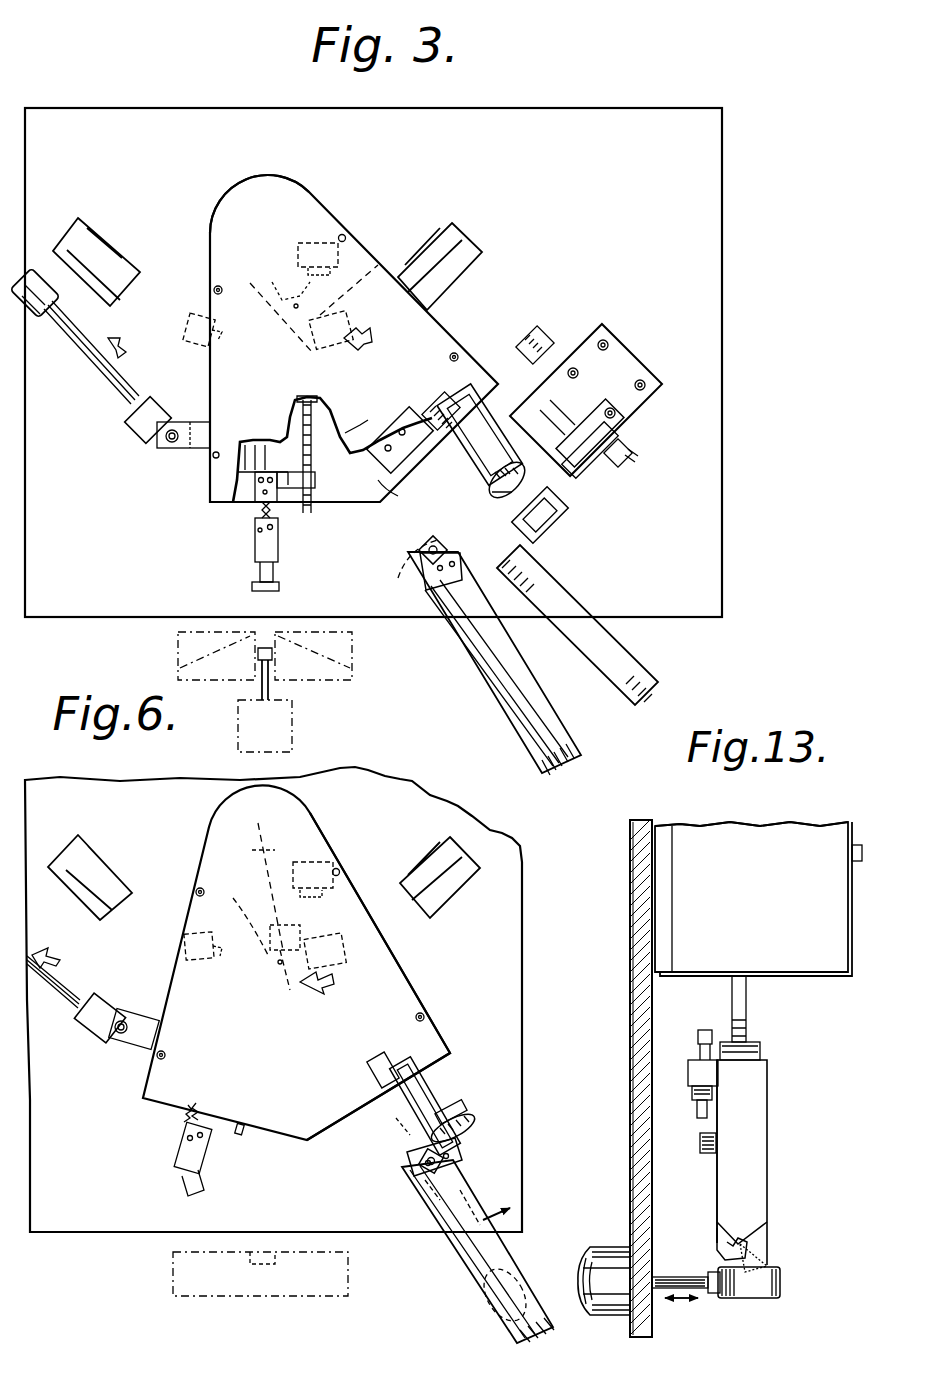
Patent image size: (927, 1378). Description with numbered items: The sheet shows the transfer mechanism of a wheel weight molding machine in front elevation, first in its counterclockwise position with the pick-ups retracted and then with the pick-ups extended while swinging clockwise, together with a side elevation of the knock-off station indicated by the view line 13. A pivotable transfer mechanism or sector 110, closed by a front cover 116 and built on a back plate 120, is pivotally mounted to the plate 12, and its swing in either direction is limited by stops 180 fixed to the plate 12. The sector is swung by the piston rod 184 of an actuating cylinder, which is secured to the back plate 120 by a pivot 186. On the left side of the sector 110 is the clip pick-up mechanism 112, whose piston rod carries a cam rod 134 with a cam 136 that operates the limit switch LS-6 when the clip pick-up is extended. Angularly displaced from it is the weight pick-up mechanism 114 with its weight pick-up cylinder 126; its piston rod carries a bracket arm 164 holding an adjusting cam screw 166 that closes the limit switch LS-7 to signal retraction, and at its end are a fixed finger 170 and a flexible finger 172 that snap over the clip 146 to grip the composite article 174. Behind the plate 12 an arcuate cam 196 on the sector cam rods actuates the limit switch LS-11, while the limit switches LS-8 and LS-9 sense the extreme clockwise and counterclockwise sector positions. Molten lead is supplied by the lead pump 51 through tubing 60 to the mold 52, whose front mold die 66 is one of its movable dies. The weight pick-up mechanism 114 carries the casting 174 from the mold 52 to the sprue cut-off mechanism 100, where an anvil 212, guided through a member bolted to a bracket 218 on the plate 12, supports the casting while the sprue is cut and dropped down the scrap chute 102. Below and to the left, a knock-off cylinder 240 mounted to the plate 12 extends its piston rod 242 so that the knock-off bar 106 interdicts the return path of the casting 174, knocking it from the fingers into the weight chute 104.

In FIG. 3, the plate 12 is at (688, 193).
In FIG. 6, the plate 12 is at (485, 850).
In FIG. 13, the plate 12 is at (636, 1170).
In FIG. 6, the section line 13 is at (462, 1230).
In FIG. 3, the lead pump 51 is at (292, 733).
In FIG. 6, the mold 52 is at (352, 1278).
In FIG. 3, the tubing 60 is at (270, 688).
In FIG. 3, the front mold die 66 is at (178, 660).
In FIG. 3, the sprue cut-off mechanism 100 is at (580, 502).
In FIG. 3, the scrap chute 102 is at (566, 608).
In FIG. 3, the weight chute 104 is at (556, 742).
In FIG. 6, the weight chute 104 is at (465, 1257).
In FIG. 3, the knock-off bar 106 is at (443, 548).
In FIG. 6, the knock-off bar 106 is at (442, 1163).
In FIG. 13, the knock-off bar 106 is at (780, 1282).
In FIG. 3, the sector 110 is at (206, 270).
In FIG. 6, the sector 110 is at (303, 808).
In FIG. 13, the sector 110 is at (776, 824).
In FIG. 3, the clip pick-up mechanism 112 is at (252, 548).
In FIG. 6, the clip pick-up mechanism 112 is at (206, 1162).
In FIG. 3, the weight pick-up mechanism 114 is at (498, 412).
In FIG. 6, the weight pick-up mechanism 114 is at (440, 1110).
In FIG. 13, the weight pick-up mechanism 114 is at (768, 1096).
In FIG. 3, the front cover 116 is at (288, 215).
In FIG. 6, the front cover 116 is at (415, 1042).
In FIG. 13, the front cover 116 is at (855, 958).
In FIG. 13, the back plate 120 is at (666, 858).
In FIG. 3, the weight pick-up cylinder 126 is at (462, 358).
In FIG. 3, the cam rod 134 is at (312, 512).
In FIG. 3, the cam 136 is at (290, 417).
In FIG. 3, the clip 146 is at (280, 588).
In FIG. 6, the clip 146 is at (460, 1116).
In FIG. 13, the clip 146 is at (727, 1252).
In FIG. 13, the bracket arm 164 is at (696, 1090).
In FIG. 13, the adjusting cam screw 166 is at (700, 1038).
In FIG. 13, the fixed finger 170 is at (745, 1152).
In FIG. 13, the flexible finger 172 is at (717, 1240).
In FIG. 3, the composite article 174 is at (482, 487).
In FIG. 6, the composite article 174 is at (476, 1124).
In FIG. 13, the composite article 174 is at (758, 1262).
In FIG. 3, the stops 180 is at (100, 262).
In FIG. 6, the stops 180 is at (92, 880).
In FIG. 3, the piston rod 184 is at (100, 350).
In FIG. 6, the piston rod 184 is at (64, 1004).
In FIG. 3, the pivot 186 is at (162, 446).
In FIG. 3, the arcuate cam 196 is at (372, 265).
In FIG. 6, the arcuate cam 196 is at (270, 975).
In FIG. 3, the anvil 212 is at (556, 525).
In FIG. 3, the bracket 218 is at (620, 468).
In FIG. 3, the knock-off cylinder 240 is at (398, 580).
In FIG. 13, the knock-off cylinder 240 is at (608, 1252).
In FIG. 13, the piston rod 242 is at (693, 1278).
In FIG. 3, the limit switch LS6 LS-6 is at (368, 420).
In FIG. 3, the limit switch LS7 LS-7 is at (398, 496).
In FIG. 3, the limit switch LS8 LS-8 is at (352, 326).
In FIG. 6, the limit switch LS8 LS-8 is at (348, 958).
In FIG. 3, the limit switch LS9 LS-9 is at (196, 348).
In FIG. 6, the limit switch LS9 LS-9 is at (185, 958).
In FIG. 3, the limit switch LS11 LS-11 is at (322, 240).
In FIG. 6, the limit switch LS11 LS-11 is at (325, 860).